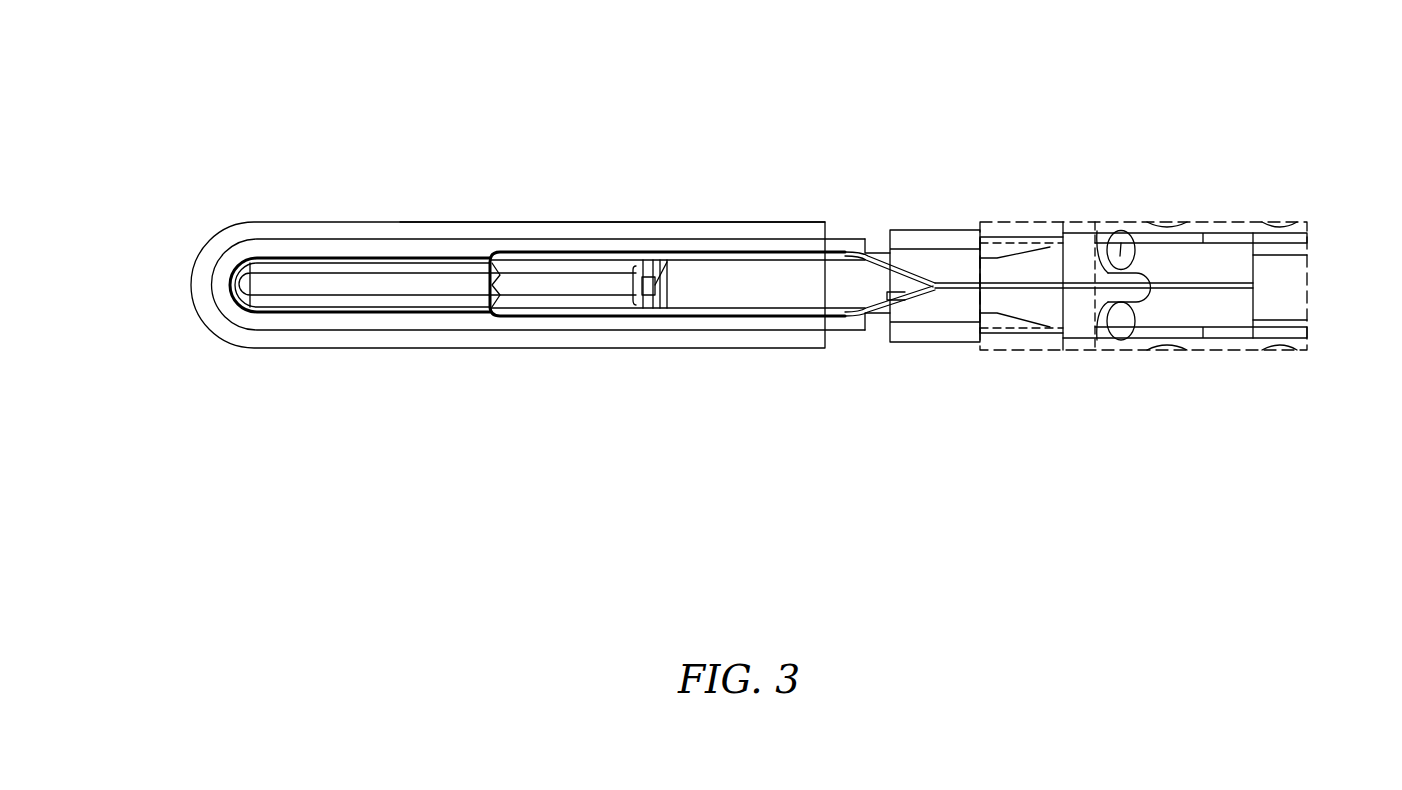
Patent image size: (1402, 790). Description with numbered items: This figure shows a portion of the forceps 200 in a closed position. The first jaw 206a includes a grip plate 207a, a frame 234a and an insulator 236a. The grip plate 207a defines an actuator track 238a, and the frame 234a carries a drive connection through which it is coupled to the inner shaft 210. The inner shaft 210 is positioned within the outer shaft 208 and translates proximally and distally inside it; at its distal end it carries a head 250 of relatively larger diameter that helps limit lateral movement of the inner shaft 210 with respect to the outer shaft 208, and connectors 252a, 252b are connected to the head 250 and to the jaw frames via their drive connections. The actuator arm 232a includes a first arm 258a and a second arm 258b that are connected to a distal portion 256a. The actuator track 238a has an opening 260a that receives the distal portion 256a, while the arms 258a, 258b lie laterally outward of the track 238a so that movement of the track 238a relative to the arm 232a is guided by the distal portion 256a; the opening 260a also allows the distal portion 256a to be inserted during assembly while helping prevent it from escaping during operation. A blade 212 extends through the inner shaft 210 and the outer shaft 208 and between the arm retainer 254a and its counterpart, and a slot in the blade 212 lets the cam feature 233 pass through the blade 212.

The forceps 200 is at (165, 82).
The jaw 206a is at (250, 203).
The grip plate 207a is at (352, 283).
The frame 234a is at (392, 218).
The insulator 236a is at (402, 232).
The actuator track 238a is at (525, 260).
The first arm 258a is at (568, 250).
The second arm 258b is at (625, 313).
The opening 260a is at (668, 290).
The distal portion 256a is at (500, 318).
The actuator arm 232a is at (1031, 270).
The outer shaft 208 is at (1048, 220).
The cam feature 233 is at (1078, 302).
The arm retainer 254a is at (1125, 232).
The connector 252a is at (1286, 226).
The connector 252b is at (1295, 345).
The inner shaft 210 is at (1296, 272).
The head 250 is at (1295, 306).
The blade 212 is at (1205, 288).